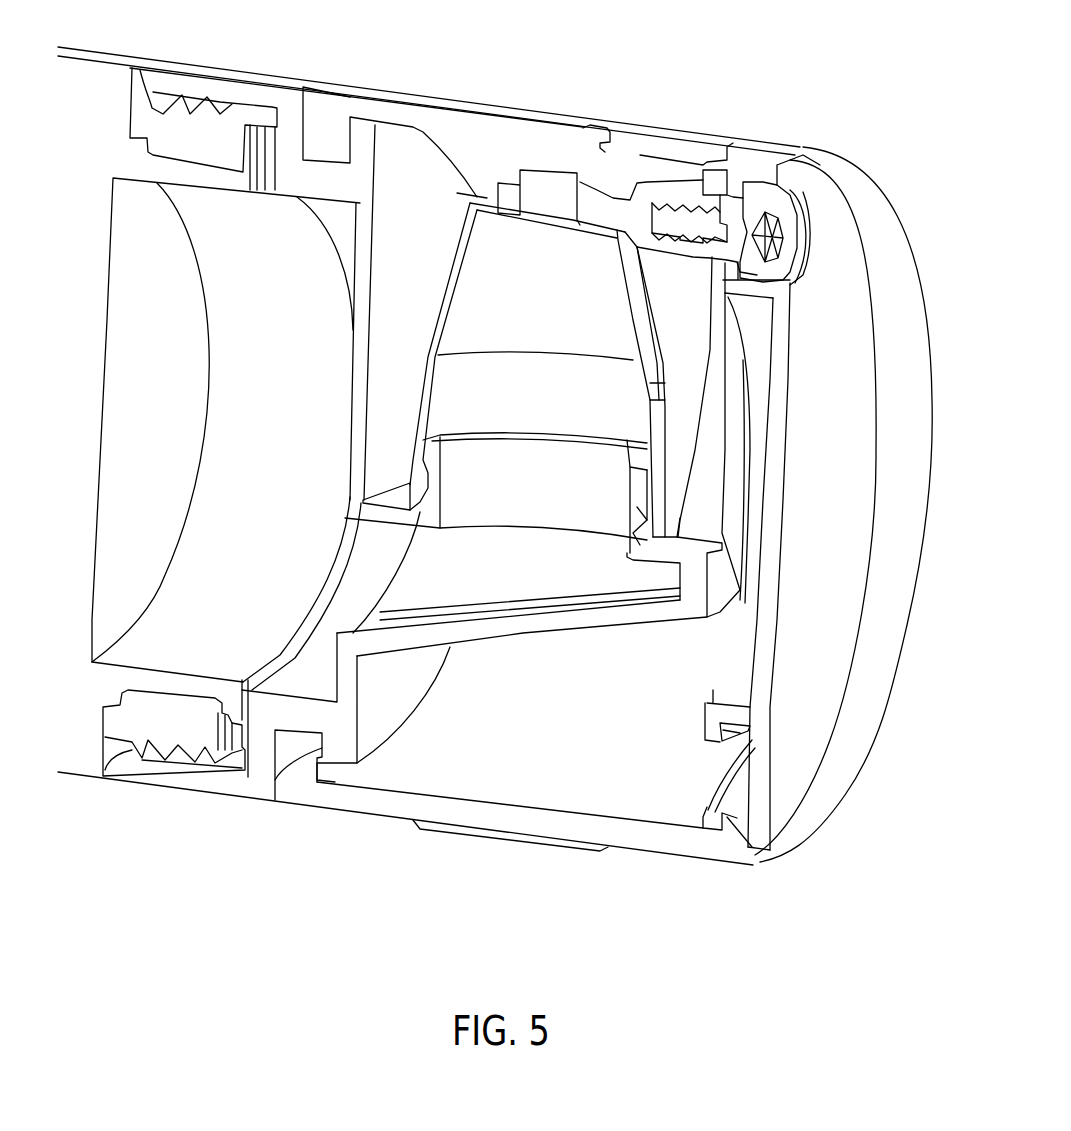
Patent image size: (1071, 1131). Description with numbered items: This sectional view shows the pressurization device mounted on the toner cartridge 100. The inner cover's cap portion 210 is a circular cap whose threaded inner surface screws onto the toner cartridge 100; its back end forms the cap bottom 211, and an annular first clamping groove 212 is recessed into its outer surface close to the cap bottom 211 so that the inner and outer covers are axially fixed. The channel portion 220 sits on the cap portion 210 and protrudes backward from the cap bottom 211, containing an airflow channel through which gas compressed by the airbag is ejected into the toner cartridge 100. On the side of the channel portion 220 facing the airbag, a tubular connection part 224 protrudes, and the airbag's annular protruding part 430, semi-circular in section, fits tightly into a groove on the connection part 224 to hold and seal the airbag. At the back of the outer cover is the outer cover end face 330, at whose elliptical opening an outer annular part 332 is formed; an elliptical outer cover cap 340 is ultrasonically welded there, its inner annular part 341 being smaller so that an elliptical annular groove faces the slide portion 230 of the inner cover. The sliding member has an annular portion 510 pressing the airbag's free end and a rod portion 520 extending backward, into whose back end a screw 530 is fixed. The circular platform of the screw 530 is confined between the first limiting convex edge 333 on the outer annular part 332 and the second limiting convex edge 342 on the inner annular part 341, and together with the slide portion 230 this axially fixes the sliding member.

The toner cartridge 100 is at (68, 748).
The cap portion 210 is at (193, 777).
The cap bottom 211 is at (423, 180).
The first clamping groove 212 is at (313, 145).
The channel portion 220 is at (523, 627).
The connection part 224 is at (427, 520).
The slide portion 230 is at (708, 462).
The outer cover end face 330 is at (888, 273).
The outer annular part 332 is at (740, 810).
The first limiting convex edge 333 is at (722, 812).
The outer cover cap 340 is at (840, 235).
The inner annular part 341 is at (715, 725).
The second limiting convex edge 342 is at (720, 733).
The protruding part 430 is at (643, 520).
The annular portion 510 is at (593, 193).
The rod portion 520 is at (672, 198).
The screw 530 is at (755, 205).